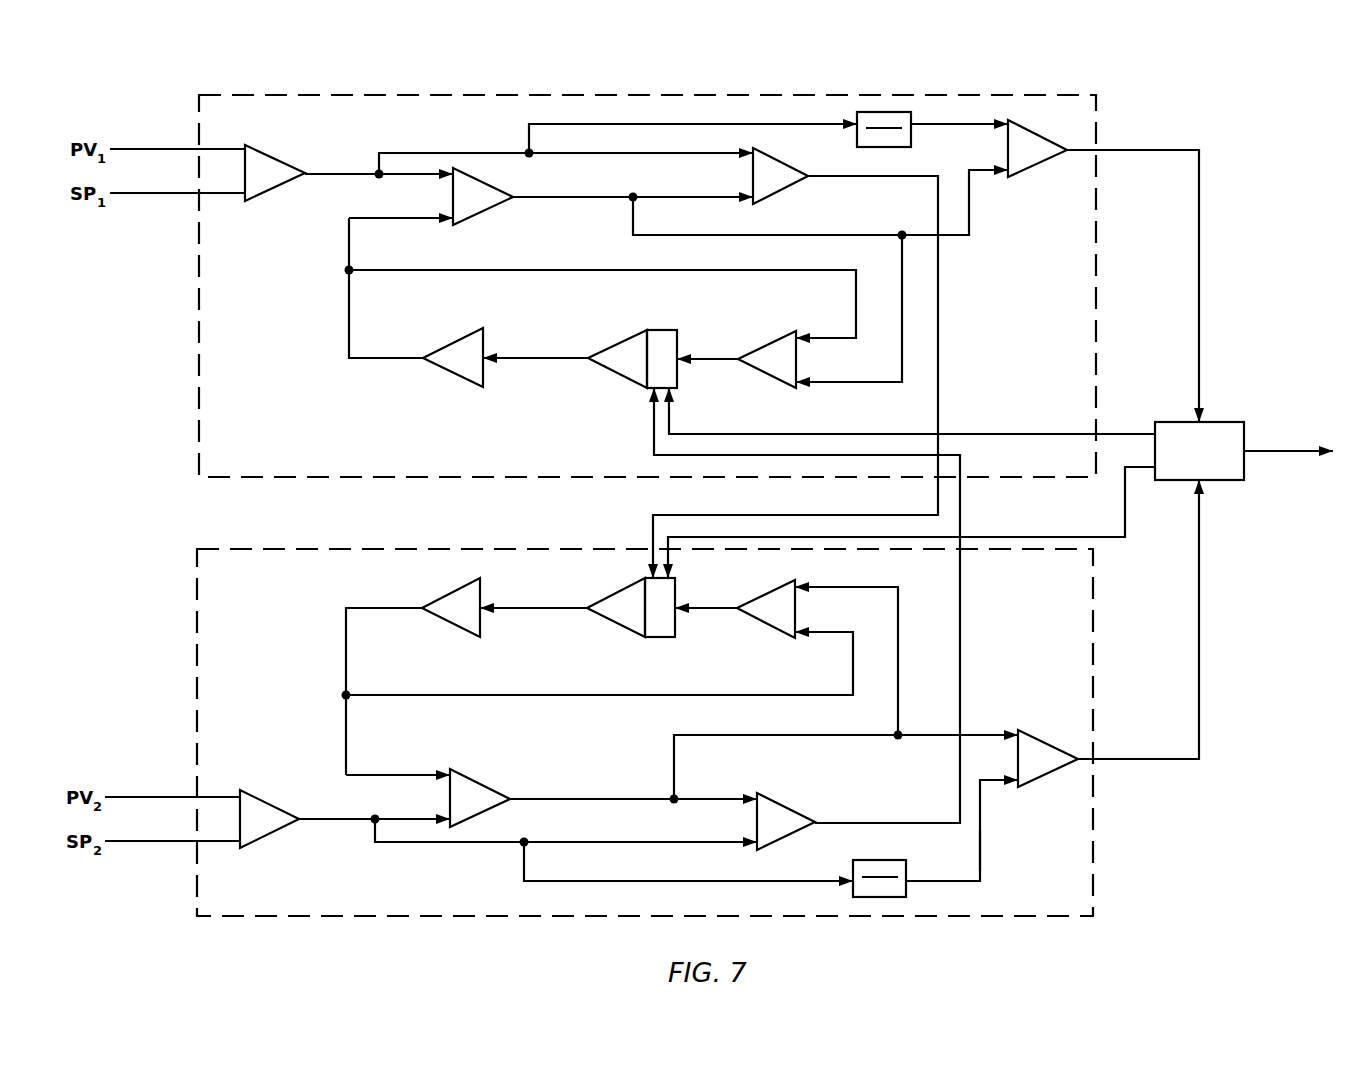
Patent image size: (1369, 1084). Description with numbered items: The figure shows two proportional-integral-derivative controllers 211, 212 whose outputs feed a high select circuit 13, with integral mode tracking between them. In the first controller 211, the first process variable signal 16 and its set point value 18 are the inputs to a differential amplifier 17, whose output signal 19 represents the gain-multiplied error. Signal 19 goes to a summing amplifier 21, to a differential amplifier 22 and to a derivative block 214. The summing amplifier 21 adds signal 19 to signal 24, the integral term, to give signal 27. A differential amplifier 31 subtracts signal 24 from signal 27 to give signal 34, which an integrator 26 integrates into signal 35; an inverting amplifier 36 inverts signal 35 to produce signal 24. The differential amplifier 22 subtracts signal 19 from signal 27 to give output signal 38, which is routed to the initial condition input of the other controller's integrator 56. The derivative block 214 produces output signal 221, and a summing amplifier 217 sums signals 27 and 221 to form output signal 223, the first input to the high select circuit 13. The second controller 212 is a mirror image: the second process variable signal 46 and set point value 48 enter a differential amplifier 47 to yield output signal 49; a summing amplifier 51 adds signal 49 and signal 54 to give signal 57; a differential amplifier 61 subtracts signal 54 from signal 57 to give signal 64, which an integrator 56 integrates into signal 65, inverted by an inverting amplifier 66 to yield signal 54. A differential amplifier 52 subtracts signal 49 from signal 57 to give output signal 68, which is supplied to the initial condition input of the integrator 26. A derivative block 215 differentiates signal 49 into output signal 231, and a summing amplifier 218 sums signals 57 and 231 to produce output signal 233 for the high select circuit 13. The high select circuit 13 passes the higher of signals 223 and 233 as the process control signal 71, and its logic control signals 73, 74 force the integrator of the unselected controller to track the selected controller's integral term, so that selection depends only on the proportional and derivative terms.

The high select circuit 13 is at (1225, 482).
The first process variable signal 16 is at (148, 149).
The differential amplifier 17 is at (292, 164).
The set point value 18 is at (152, 196).
The output signal 19 is at (340, 176).
The summing amplifier 21 is at (486, 206).
The differential amplifier 22 is at (790, 192).
The signal 24 is at (380, 360).
The integrator 26 is at (612, 344).
The signal 27 is at (580, 200).
The differential amplifier 31 is at (756, 344).
The signal 34 is at (712, 362).
The signal 35 is at (542, 356).
The inverting amplifier 36 is at (442, 342).
The output signal 38 is at (856, 182).
The second process variable signal 46 is at (144, 796).
The differential amplifier 47 is at (260, 798).
The set point value 48 is at (146, 844).
The output signal 49 is at (337, 822).
The summing amplifier 51 is at (470, 777).
The differential amplifier 52 is at (778, 799).
The signal 54 is at (382, 611).
The integrator 56 is at (662, 640).
The signal 57 is at (581, 798).
The differential amplifier 61 is at (756, 601).
The signal 64 is at (710, 611).
The signal 65 is at (543, 611).
The inverting amplifier 66 is at (440, 620).
The output signal 68 is at (866, 820).
The process control signal 71 is at (1282, 449).
The logic control signal 73 is at (1127, 520).
The logic control signal 74 is at (1120, 434).
The proportional-integral-derivative controller 211 is at (199, 303).
The proportional-integral-derivative controller 212 is at (197, 635).
The derivative block 214 is at (850, 132).
The derivative block 215 is at (906, 872).
The summing amplifier 217 is at (1038, 170).
The summing amplifier 218 is at (1056, 772).
The output signal 221 is at (946, 128).
The output signal 223 is at (1150, 154).
The output signal 231 is at (982, 847).
The output signal 233 is at (1148, 763).